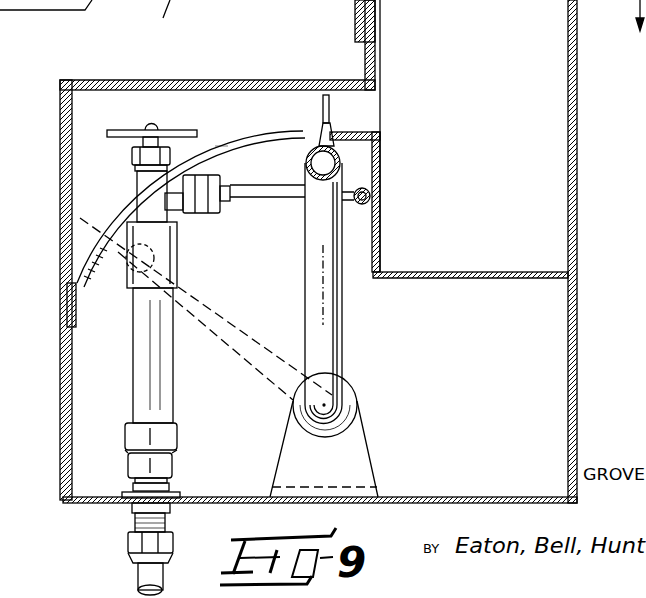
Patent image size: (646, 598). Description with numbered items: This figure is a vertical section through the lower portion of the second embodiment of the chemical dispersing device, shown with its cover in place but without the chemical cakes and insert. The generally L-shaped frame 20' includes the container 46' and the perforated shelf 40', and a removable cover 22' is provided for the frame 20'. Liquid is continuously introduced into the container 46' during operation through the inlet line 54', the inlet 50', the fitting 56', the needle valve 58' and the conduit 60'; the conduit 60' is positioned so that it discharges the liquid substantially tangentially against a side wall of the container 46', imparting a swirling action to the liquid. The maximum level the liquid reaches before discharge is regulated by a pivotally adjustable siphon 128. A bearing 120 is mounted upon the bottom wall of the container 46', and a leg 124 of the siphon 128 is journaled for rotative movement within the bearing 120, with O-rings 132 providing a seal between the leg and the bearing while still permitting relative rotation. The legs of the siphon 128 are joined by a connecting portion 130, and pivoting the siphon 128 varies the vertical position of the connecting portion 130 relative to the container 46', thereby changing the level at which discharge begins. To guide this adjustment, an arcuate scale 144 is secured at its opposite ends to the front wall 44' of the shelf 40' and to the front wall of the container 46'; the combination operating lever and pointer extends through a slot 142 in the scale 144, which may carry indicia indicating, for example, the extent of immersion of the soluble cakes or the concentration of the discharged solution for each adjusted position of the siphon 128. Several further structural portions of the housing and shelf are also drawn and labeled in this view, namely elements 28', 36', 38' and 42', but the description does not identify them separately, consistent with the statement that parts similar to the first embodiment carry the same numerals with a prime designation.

The frame 20' is at (288, 291).
The cover 22' is at (217, 54).
The compartment 28' is at (474, 136).
The partition wall 36' is at (396, 136).
The flange 38' is at (341, 21).
The perforated shelf 40' is at (470, 301).
The shelf wall 42' is at (470, 258).
The front wall 44' is at (383, 202).
The container 46' is at (587, 251).
The inlet 50' is at (132, 508).
The inlet line 54' is at (123, 554).
The fitting 56' is at (133, 385).
The needle valve 58' is at (140, 206).
The conduit 60' is at (235, 189).
The bearing 120 is at (350, 395).
The leg 124 is at (325, 309).
The siphon 128 is at (226, 302).
The connecting portion 130 is at (342, 165).
The O-rings 132 is at (347, 408).
The slot 142 is at (274, 136).
The arcuate scale 144 is at (222, 146).